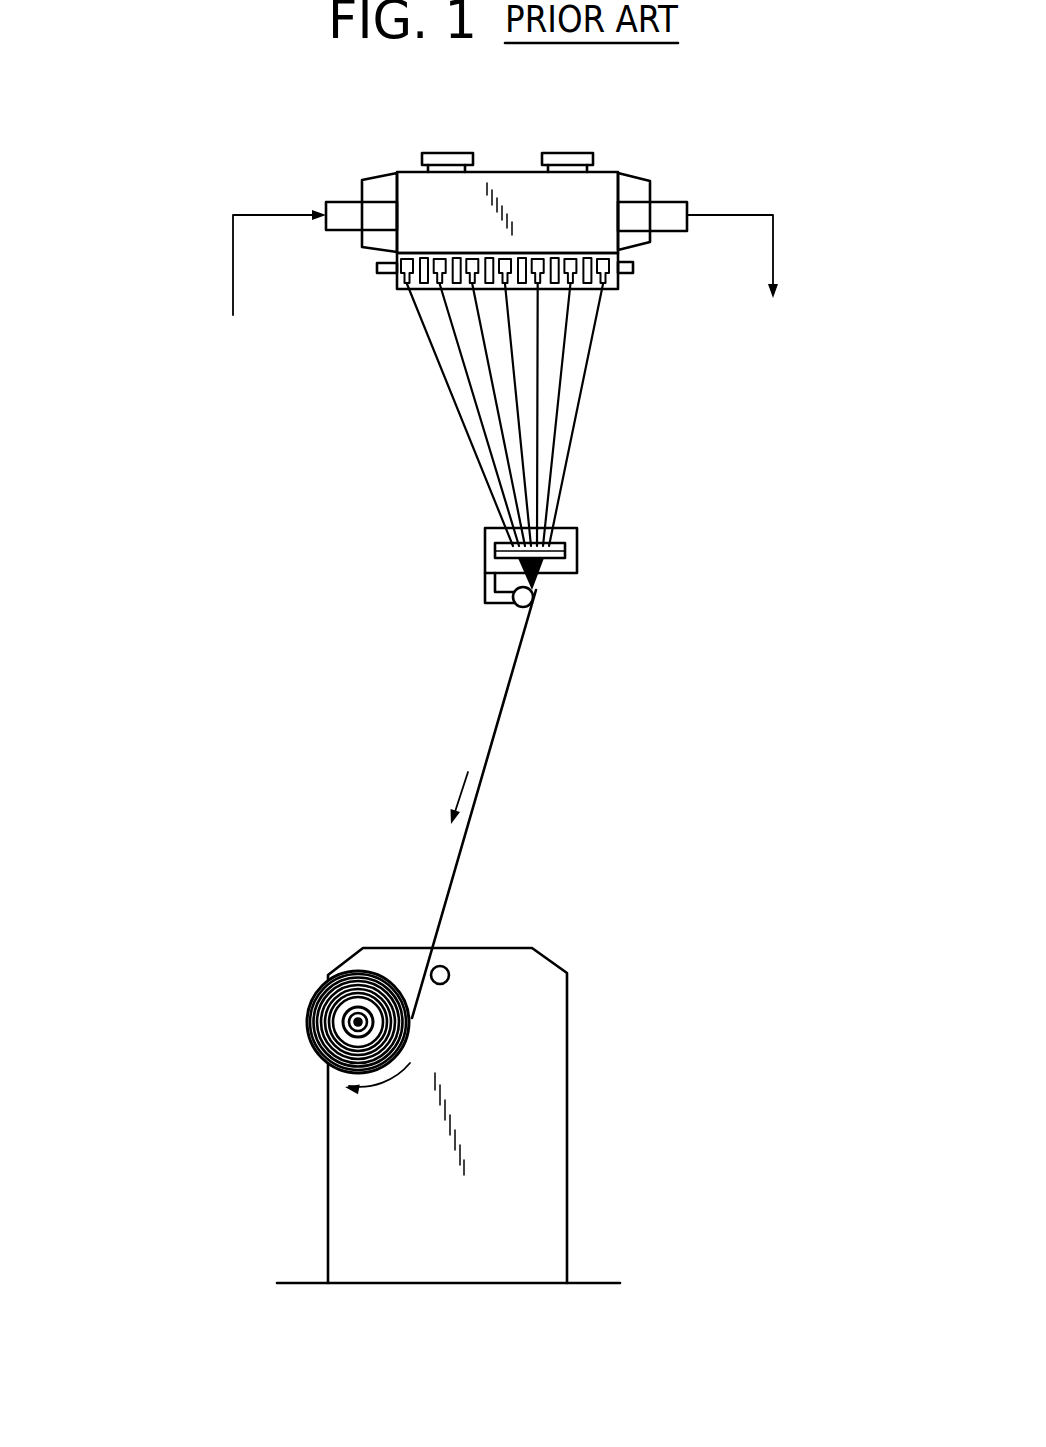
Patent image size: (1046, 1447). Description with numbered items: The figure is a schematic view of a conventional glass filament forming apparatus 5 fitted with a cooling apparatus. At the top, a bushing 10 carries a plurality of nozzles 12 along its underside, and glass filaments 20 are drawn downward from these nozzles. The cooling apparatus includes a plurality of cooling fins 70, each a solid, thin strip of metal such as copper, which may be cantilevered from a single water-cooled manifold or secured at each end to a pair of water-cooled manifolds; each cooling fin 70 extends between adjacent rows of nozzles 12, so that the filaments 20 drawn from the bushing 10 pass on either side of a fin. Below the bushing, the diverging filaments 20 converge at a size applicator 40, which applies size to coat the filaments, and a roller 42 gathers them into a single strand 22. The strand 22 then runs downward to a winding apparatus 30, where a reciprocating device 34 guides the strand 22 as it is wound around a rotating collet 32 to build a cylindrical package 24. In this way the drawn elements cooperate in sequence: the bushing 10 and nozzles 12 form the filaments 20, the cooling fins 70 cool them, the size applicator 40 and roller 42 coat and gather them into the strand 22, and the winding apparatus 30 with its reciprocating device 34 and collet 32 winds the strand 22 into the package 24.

The glass filament forming apparatus 5 is at (334, 379).
The bushing 10 is at (595, 186).
The nozzles 12 is at (398, 268).
The filaments 20 is at (473, 408).
The strand 22 is at (482, 782).
The cylindrical package 24 is at (307, 1012).
The winding apparatus 30 is at (512, 958).
The rotating collet 32 is at (358, 1022).
The reciprocating device 34 is at (450, 980).
The size applicator 40 is at (485, 544).
The roller 42 is at (533, 598).
The cooling fins 70 is at (555, 289).